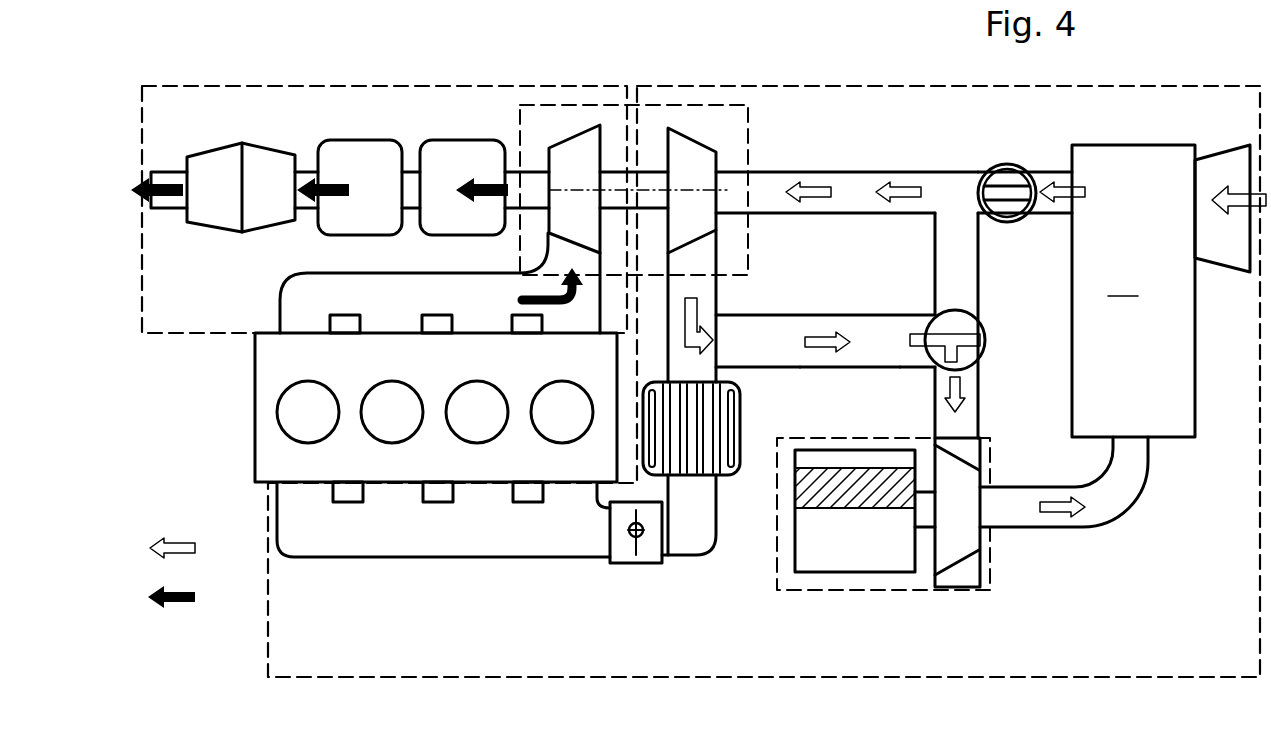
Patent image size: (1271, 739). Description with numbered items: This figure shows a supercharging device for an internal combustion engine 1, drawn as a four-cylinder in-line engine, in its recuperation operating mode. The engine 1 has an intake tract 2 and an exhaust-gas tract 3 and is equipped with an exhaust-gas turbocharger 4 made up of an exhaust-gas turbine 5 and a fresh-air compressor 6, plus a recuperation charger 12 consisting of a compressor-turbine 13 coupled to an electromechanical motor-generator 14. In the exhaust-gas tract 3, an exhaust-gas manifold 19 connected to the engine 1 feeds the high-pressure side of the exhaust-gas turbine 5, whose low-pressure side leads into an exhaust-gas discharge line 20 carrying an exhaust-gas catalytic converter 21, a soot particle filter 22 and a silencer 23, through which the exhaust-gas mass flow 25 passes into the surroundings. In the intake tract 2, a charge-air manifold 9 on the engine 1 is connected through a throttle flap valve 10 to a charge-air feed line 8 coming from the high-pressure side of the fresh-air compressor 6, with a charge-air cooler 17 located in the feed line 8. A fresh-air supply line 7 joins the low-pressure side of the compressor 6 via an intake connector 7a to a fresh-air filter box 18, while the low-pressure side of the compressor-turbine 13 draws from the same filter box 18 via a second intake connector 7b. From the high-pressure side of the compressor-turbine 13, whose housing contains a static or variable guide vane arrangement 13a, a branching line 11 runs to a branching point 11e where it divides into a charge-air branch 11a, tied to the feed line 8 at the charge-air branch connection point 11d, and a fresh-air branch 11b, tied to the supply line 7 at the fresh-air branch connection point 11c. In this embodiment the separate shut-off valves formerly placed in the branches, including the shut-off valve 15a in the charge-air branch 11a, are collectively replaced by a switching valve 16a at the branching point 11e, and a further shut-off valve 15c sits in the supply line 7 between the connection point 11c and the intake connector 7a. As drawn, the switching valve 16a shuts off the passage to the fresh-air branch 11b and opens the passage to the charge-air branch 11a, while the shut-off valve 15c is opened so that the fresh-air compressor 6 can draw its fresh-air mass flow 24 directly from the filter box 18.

The internal combustion engine 1 is at (250, 450).
The intake tract 2 is at (268, 635).
The exhaust-gas tract 3 is at (178, 335).
The exhaust-gas turbocharger 4 is at (653, 105).
The exhaust-gas turbine 5 is at (575, 155).
The fresh-air compressor 6 is at (694, 162).
The fresh-air supply line 7 is at (868, 190).
The intake connector 7a is at (1028, 172).
The intake connector 7b is at (1030, 495).
The charge-air feed line 8 is at (700, 535).
The charge-air manifold 9 is at (432, 550).
The throttle flap valve 10 is at (627, 540).
The branching line 11 is at (968, 395).
The charge-air branch 11a is at (870, 340).
The fresh-air branch 11b is at (963, 287).
The fresh-air branch connection point 11c is at (980, 217).
The charge-air branch connection point 11d is at (707, 327).
The branching point 11e is at (978, 325).
The recuperation charger 12 is at (917, 592).
The compressor-turbine 13 is at (975, 555).
The guide vane arrangement 13a is at (955, 578).
The motor-generator 14 is at (860, 565).
The valve 15a is at (760, 345).
The shut-off valve 15c is at (997, 188).
The switching valve 16a is at (935, 372).
The charge-air cooler 17 is at (728, 478).
The fresh-air filter box 18 is at (1133, 291).
The exhaust-gas manifold 19 is at (300, 307).
The exhaust-gas discharge line 20 is at (533, 168).
The exhaust-gas catalytic converter 21 is at (465, 150).
The soot particle filter 22 is at (355, 150).
The silencer 23 is at (262, 158).
The fresh-air mass flow 24 is at (190, 549).
The exhaust-gas mass flow 25 is at (189, 598).